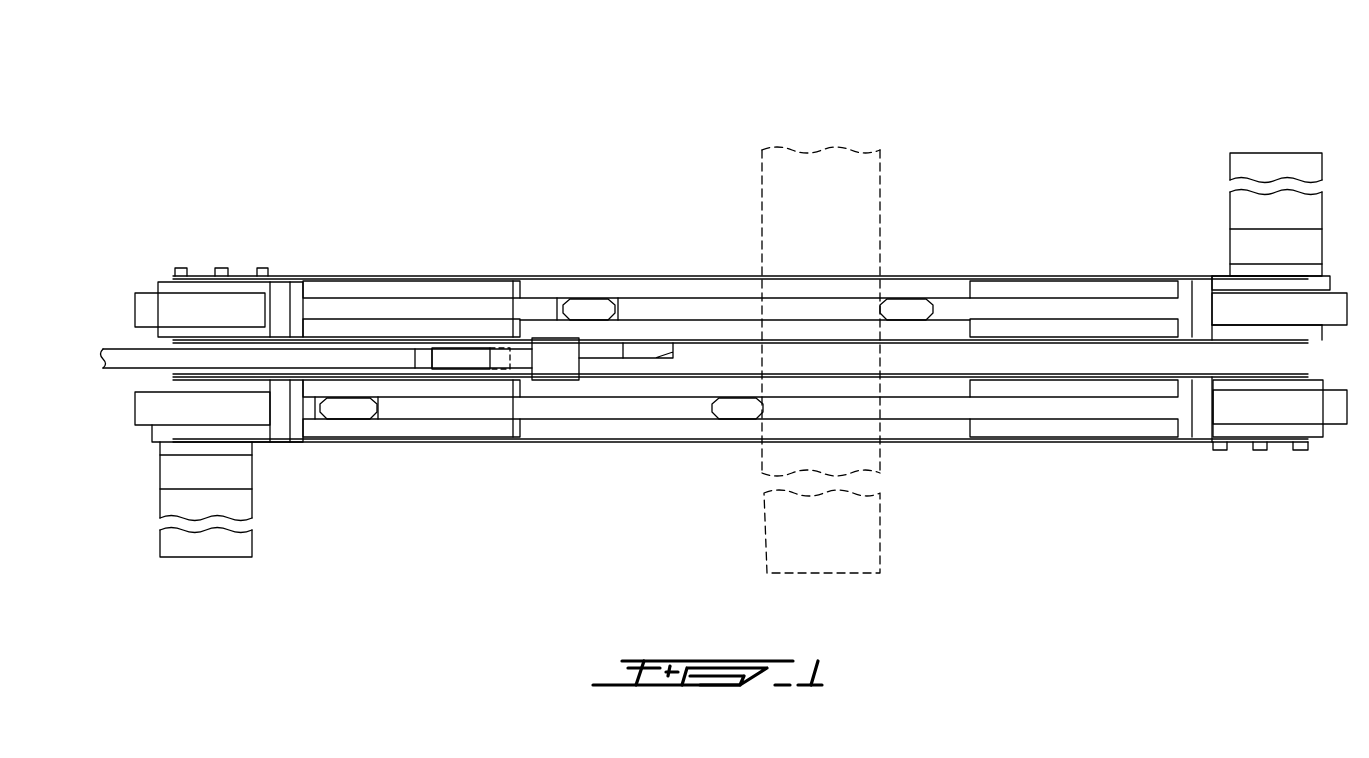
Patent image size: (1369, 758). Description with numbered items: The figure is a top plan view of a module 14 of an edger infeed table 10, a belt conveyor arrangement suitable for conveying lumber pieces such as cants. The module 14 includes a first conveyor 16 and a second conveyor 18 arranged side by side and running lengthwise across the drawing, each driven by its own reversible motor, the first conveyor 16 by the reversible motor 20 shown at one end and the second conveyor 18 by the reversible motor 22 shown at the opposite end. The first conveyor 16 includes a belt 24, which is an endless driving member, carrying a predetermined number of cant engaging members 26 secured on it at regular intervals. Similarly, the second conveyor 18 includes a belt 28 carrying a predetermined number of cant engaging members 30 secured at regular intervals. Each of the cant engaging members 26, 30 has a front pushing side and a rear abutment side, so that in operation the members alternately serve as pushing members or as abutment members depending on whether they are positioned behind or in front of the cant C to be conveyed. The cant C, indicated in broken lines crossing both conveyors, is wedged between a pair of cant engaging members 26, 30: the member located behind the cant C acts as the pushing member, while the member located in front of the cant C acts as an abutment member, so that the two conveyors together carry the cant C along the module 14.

The edger infeed table 10 is at (1085, 131).
The cant C is at (826, 165).
The module 14 is at (1152, 460).
The first conveyor 16 is at (403, 309).
The second conveyor 18 is at (470, 408).
The reversible motor 20 is at (1252, 210).
The reversible motor 22 is at (172, 470).
The belt 24 is at (335, 305).
The cant engaging member 26 is at (588, 308).
The belt 28 is at (941, 410).
The cant engaging member 30 is at (345, 410).